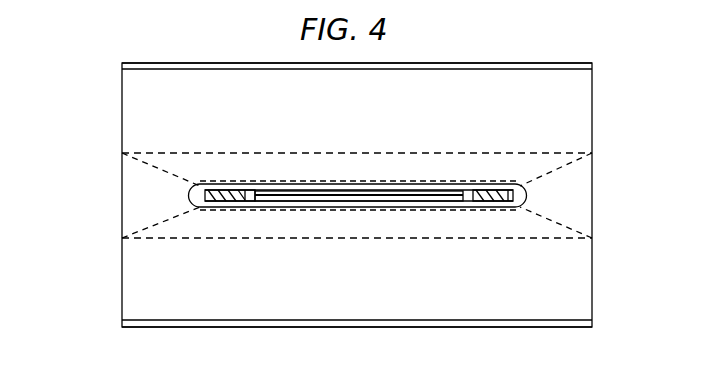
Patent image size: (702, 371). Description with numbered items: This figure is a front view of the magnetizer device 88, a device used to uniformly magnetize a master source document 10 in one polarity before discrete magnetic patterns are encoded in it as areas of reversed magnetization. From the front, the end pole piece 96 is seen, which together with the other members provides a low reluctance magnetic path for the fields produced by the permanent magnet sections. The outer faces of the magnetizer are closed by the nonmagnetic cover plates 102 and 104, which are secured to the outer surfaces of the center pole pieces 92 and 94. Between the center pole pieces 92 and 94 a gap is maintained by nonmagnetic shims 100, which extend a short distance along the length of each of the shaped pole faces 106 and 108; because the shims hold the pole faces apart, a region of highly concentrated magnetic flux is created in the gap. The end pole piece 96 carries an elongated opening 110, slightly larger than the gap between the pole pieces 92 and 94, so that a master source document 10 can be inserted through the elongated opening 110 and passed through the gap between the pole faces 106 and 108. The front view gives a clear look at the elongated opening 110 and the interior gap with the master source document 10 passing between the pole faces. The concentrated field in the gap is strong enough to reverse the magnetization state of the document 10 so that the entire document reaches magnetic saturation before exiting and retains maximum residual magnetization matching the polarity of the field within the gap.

The magnetizer device 88 is at (108, 98).
The nonmagnetic cover plate 102 is at (446, 63).
The nonmagnetic cover plate 104 is at (352, 322).
The end pole piece 96 is at (374, 118).
The center pole piece 92 is at (473, 107).
The center pole piece 94 is at (345, 283).
The elongated opening 110 is at (365, 183).
The nonmagnetic shim 100 is at (236, 190).
The master source document 10 is at (337, 196).
The pole face 106 is at (450, 181).
The pole face 108 is at (462, 210).